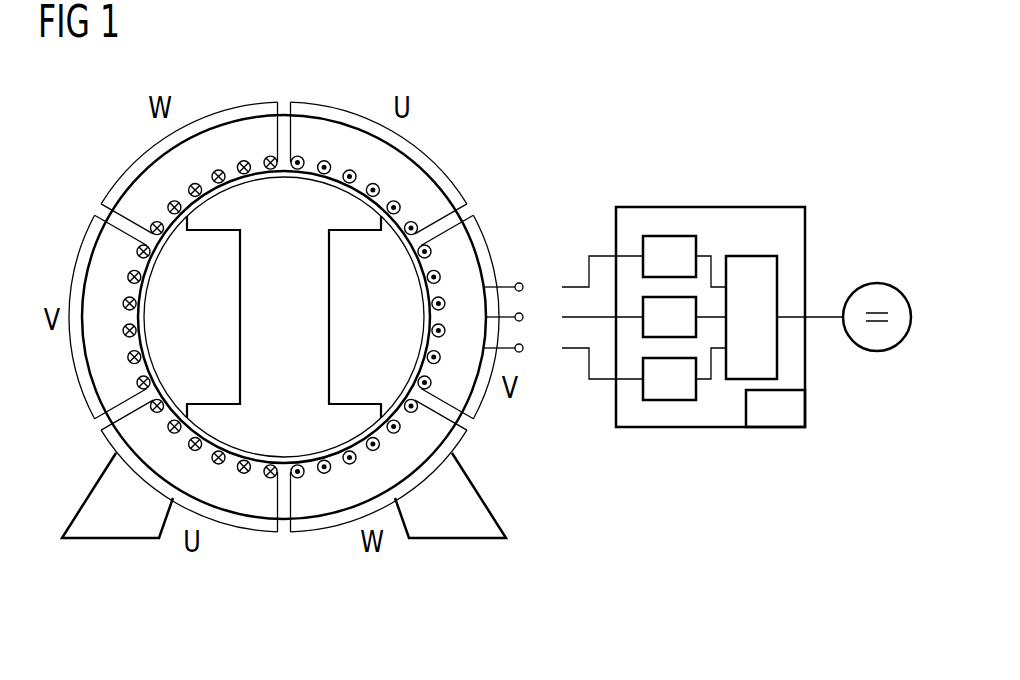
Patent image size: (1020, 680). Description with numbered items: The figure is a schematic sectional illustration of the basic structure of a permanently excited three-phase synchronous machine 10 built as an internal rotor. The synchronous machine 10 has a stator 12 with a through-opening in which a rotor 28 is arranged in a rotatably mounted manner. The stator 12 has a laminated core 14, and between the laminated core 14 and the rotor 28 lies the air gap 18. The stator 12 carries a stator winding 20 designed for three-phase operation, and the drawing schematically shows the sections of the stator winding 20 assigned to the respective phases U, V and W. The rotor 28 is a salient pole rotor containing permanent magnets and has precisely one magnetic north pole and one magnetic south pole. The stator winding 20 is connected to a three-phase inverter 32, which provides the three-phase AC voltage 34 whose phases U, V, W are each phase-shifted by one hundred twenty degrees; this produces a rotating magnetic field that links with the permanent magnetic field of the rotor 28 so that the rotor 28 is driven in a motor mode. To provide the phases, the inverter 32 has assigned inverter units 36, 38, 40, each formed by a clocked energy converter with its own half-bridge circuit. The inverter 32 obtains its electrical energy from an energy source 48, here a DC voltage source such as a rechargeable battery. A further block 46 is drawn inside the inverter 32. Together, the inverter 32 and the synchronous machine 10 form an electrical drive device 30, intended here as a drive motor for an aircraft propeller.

The synchronous machine 10 is at (470, 114).
The stator 12 is at (500, 435).
The laminated core 14 is at (313, 527).
The air gap 18 is at (257, 470).
The stator winding 20 is at (153, 305).
The rotor 28 is at (304, 268).
The electrical drive device 30 is at (698, 514).
The inverter 32 is at (770, 207).
The three-phase AC voltage 34 is at (577, 250).
The inverter unit 36 is at (659, 272).
The inverter unit 38 is at (659, 333).
The inverter unit 40 is at (659, 394).
The control unit 46 is at (776, 408).
The energy source 48 is at (877, 352).